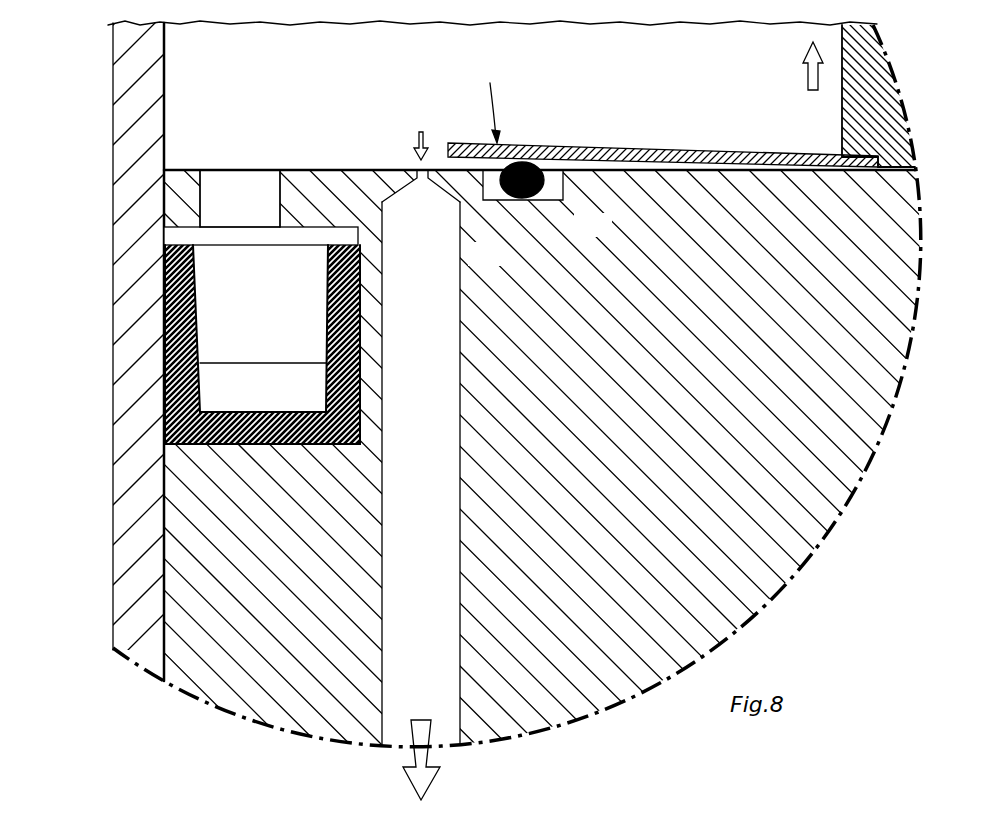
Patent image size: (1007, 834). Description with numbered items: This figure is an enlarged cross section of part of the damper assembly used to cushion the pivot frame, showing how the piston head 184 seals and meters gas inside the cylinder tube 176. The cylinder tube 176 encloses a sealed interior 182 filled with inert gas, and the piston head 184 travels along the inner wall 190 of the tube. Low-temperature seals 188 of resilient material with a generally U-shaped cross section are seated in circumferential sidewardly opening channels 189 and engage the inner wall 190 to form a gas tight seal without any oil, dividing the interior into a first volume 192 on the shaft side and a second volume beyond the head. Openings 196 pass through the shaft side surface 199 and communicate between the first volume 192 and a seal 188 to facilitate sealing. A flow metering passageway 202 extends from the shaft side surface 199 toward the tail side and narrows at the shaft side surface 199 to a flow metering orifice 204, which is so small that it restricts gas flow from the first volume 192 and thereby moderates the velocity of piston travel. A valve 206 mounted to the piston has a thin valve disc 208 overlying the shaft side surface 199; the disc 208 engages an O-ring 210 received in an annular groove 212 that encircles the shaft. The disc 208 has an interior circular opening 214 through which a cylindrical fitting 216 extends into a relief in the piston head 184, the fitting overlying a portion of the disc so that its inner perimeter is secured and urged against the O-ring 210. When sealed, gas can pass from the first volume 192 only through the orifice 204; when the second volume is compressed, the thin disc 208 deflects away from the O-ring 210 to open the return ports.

The cylinder tube 176 is at (118, 307).
The sealed interior 182 is at (164, 62).
The inner wall 190 is at (164, 95).
The piston head 184 is at (300, 170).
The shaft side surface 199 is at (357, 170).
The openings 196 is at (203, 183).
The circumferential sidewardly opening channels 189 is at (307, 228).
The low-temperature seals 188 is at (200, 332).
The flow metering passageway 202 is at (382, 572).
The flow metering orifice 204 is at (422, 178).
The valve 206 is at (498, 101).
The valve disc 208 is at (693, 150).
The O-ring 210 is at (500, 200).
The annular groove 212 is at (560, 200).
The first volume 192 is at (638, 84).
The cylindrical fitting 216 is at (842, 118).
The interior circular opening 214 is at (900, 158).